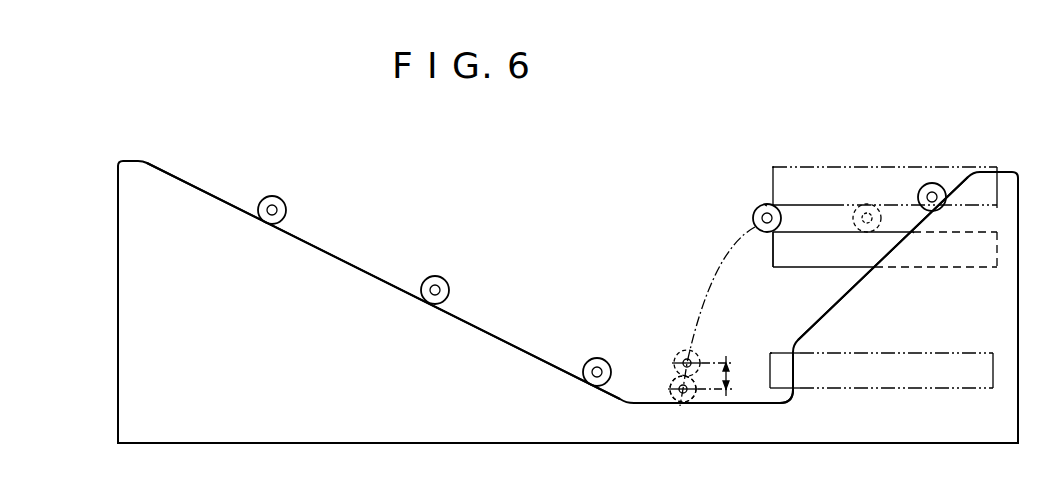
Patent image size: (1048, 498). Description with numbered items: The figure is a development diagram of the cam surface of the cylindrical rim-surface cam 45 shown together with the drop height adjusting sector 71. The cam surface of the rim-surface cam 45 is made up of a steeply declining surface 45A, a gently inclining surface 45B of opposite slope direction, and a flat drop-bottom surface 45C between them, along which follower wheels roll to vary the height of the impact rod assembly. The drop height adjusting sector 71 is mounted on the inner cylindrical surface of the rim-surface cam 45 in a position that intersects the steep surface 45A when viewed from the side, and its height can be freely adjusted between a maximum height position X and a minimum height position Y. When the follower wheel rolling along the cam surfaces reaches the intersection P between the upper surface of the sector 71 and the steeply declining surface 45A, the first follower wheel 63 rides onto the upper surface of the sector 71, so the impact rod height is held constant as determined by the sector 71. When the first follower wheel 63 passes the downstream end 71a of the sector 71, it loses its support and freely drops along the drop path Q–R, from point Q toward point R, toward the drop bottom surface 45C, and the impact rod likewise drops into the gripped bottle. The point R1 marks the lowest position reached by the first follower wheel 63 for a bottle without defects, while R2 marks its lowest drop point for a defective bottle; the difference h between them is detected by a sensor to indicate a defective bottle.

The rim-surface cam 45 is at (126, 340).
The steeply declining surface 45A is at (821, 319).
The gently inclining surface 45B is at (515, 347).
The flat drop-bottom surface 45C is at (770, 405).
The first follower wheel 63 is at (756, 211).
The drop height adjusting sector 71 is at (799, 268).
The downstream end 71a is at (773, 256).
The drop path end point R is at (671, 384).
The lowest drop point for a bottle without defects R1 is at (695, 356).
The lowest drop point for a defective bottle R2 is at (689, 402).
The difference h is at (720, 376).
The intersection P is at (914, 233).
The drop path start point Q is at (765, 205).
The maximum height position X is at (772, 167).
The minimum height position Y is at (770, 353).